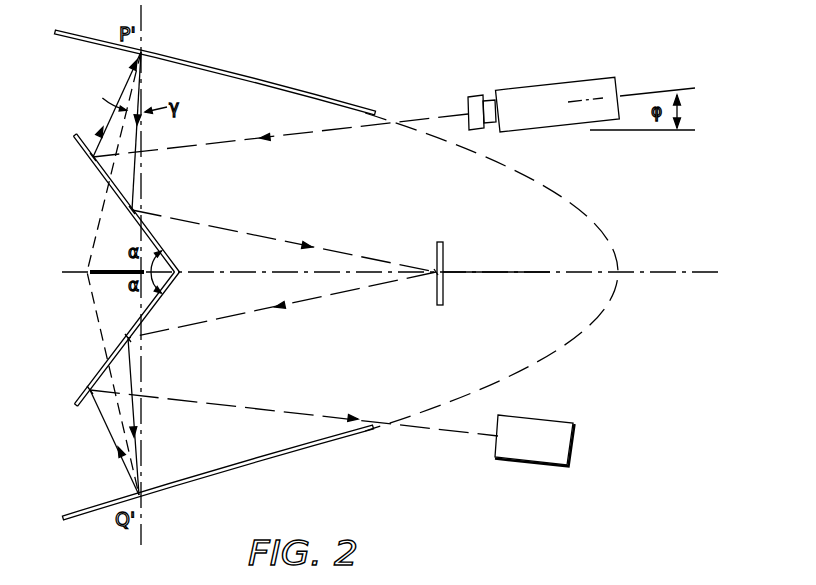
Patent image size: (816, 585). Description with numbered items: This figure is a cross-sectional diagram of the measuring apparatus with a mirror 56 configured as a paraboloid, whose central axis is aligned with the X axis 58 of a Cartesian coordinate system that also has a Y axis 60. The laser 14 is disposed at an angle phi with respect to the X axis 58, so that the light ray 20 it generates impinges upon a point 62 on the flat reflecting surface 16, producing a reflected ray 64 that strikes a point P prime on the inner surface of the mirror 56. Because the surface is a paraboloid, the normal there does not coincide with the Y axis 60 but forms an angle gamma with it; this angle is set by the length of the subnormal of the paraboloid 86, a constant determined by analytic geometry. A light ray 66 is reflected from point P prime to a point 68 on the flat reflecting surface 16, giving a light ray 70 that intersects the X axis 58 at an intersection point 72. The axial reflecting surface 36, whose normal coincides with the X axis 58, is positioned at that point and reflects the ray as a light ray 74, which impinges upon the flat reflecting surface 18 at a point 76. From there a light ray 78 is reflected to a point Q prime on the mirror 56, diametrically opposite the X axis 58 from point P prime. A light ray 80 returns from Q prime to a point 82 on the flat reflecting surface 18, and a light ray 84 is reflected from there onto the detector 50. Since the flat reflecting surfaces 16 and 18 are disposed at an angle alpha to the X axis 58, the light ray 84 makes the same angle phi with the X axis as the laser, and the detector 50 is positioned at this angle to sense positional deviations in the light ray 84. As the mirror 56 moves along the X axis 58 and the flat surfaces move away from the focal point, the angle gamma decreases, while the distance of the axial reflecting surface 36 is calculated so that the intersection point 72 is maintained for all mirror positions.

The laser 14 is at (516, 88).
The flat reflecting surface 16 is at (106, 179).
The flat reflecting surface 18 is at (96, 377).
The light ray 20 is at (268, 131).
The axial reflecting surface 36 is at (443, 247).
The detector 50 is at (523, 463).
The mirror 56 is at (244, 75).
The X axis 58 is at (524, 271).
The Y axis 60 is at (142, 24).
The point 62 is at (85, 160).
The reflected ray 64 is at (127, 83).
The light ray 66 is at (143, 123).
The point 68 is at (132, 212).
The light ray 70 is at (205, 220).
The intersection point 72 is at (433, 277).
The light ray 74 is at (305, 304).
The point 76 is at (115, 337).
The light ray 78 is at (143, 358).
The light ray 80 is at (106, 423).
The point 82 is at (89, 390).
The light ray 84 is at (226, 405).
The subnormal of the paraboloid 86 is at (97, 276).